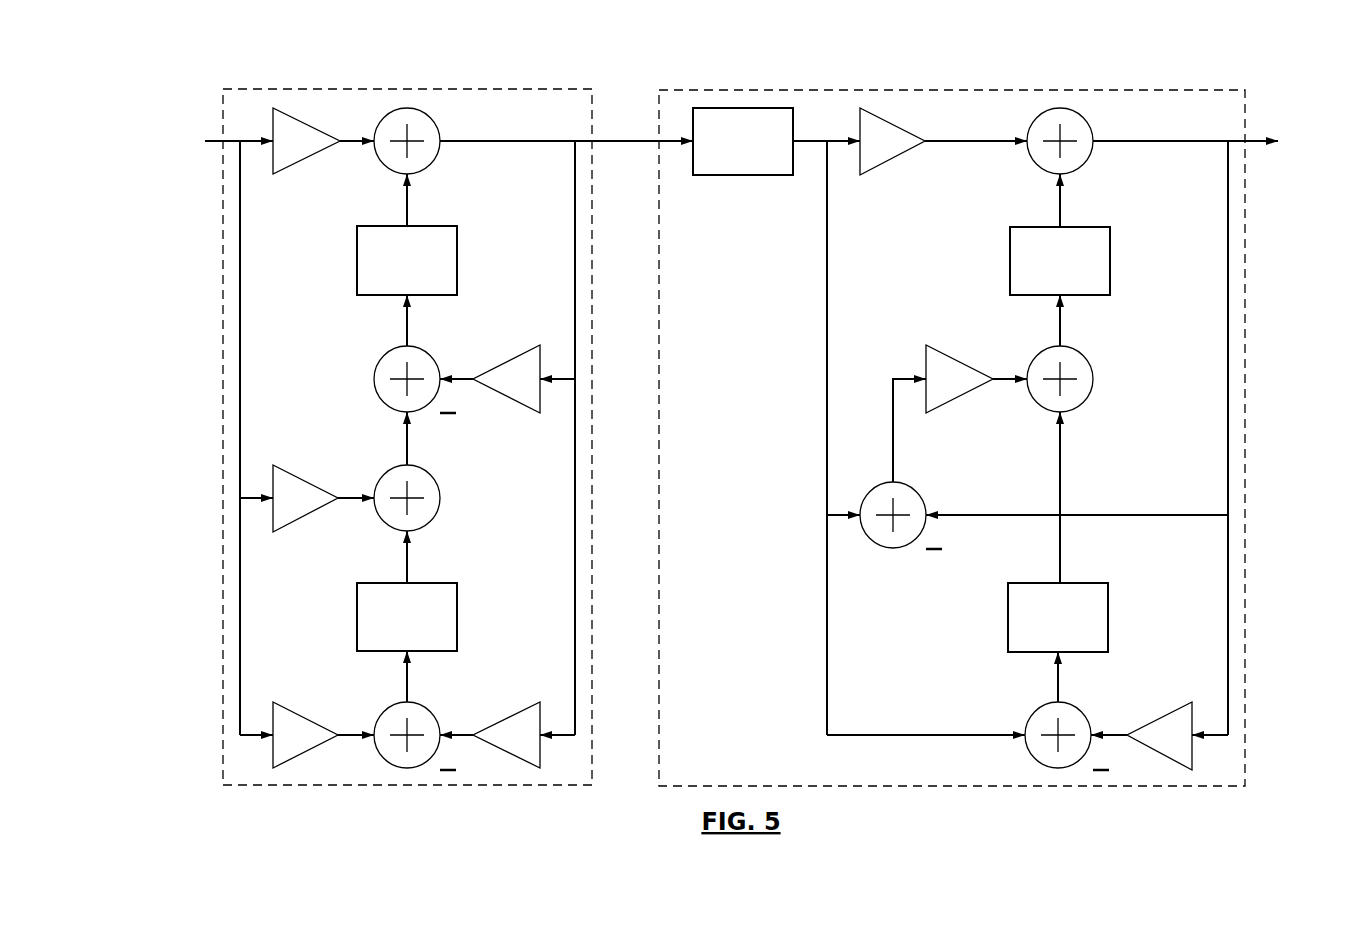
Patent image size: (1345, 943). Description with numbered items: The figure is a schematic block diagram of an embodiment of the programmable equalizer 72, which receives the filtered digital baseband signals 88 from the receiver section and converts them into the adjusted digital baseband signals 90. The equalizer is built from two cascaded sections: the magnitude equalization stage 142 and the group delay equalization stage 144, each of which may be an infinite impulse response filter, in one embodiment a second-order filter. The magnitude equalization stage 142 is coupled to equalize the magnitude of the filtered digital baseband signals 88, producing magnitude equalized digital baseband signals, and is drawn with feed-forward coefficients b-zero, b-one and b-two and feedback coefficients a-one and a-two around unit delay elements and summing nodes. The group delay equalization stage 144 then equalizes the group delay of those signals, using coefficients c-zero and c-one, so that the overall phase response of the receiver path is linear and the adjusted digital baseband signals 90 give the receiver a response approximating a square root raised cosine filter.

The programmable equalizer 72 is at (741, 433).
The filtered digital baseband signals 88 is at (209, 142).
The adjusted digital baseband signals 90 is at (1215, 130).
The magnitude equalization stage 142 is at (257, 89).
The group delay equalization stage 144 is at (843, 90).